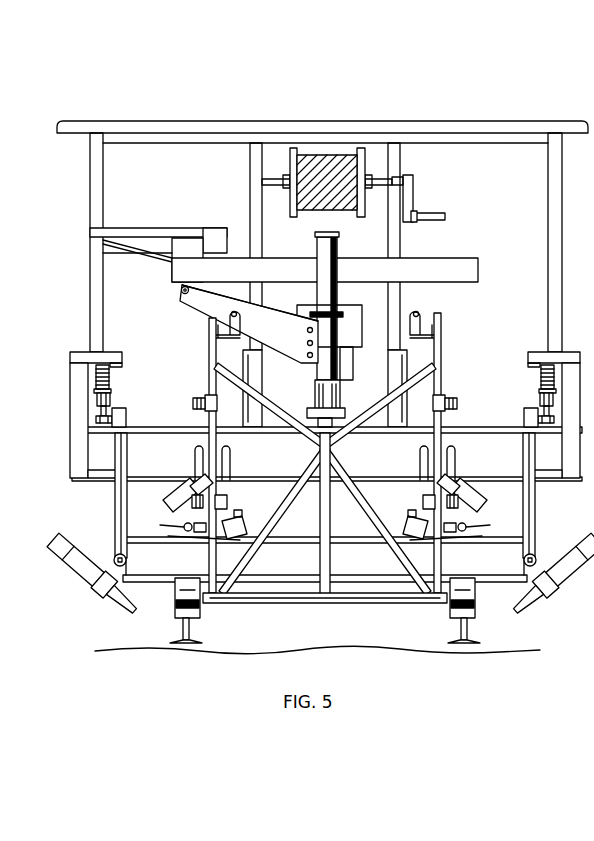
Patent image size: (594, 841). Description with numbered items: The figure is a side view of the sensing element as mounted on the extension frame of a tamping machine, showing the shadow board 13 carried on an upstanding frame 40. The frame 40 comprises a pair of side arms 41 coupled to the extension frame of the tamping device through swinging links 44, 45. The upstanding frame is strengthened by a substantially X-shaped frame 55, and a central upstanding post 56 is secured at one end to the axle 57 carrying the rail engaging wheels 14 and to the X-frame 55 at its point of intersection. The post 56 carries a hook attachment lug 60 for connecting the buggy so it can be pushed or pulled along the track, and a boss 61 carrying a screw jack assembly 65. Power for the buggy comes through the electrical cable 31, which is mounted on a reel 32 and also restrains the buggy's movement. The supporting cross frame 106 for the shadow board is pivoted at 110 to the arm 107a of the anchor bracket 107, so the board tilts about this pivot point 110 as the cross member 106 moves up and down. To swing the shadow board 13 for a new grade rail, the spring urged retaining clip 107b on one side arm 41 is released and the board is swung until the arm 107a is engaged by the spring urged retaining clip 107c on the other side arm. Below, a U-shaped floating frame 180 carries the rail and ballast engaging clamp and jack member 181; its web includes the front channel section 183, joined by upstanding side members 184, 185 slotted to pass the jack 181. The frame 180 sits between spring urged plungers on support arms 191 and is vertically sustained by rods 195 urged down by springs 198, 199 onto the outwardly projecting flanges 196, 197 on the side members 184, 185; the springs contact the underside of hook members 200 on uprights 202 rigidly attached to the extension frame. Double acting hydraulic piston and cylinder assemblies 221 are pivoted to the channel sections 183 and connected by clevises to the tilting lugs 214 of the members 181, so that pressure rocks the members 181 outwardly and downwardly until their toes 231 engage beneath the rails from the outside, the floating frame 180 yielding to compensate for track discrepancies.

The shadow board 13 is at (141, 224).
The electrical cable 31 is at (302, 176).
The reel 32 is at (355, 176).
The cross frame 106 is at (458, 272).
The pivot point 110 is at (180, 291).
The anchor bracket 107 is at (296, 335).
The arm 107a is at (207, 300).
The spring urged retaining clip 107b is at (216, 330).
The spring urged retaining clip 107c is at (421, 319).
The upstanding frame 40 is at (201, 355).
The side arms 41 is at (218, 369).
The swinging link 44 is at (204, 402).
The screw jack assembly 65 is at (347, 369).
The boss 61 is at (344, 404).
The hook members 200 is at (78, 352).
The spring 198 is at (96, 376).
The spring 199 is at (540, 373).
The rods 195 is at (108, 389).
The outwardly projecting flange 196 is at (110, 400).
The outwardly projecting flange 197 is at (545, 400).
The upstanding side member 184 is at (117, 419).
The upstanding side member 185 is at (540, 417).
The uprights 202 is at (74, 392).
The swinging link 45 is at (221, 500).
The double acting hydraulic piston and cylinder assembly 221 is at (250, 505).
The X-shaped frame 55 is at (273, 516).
The central upstanding post 56 is at (331, 529).
The tilting lug 214 is at (183, 527).
The support arm 191 is at (116, 490).
The clamp and jack member 181 is at (109, 537).
The channel section 183 is at (183, 569).
The floating frame 180 is at (501, 569).
The toe 231 is at (125, 614).
The rail engaging wheels 14 is at (192, 618).
The axle 57 is at (300, 598).
The hook attachment lug 60 is at (329, 598).